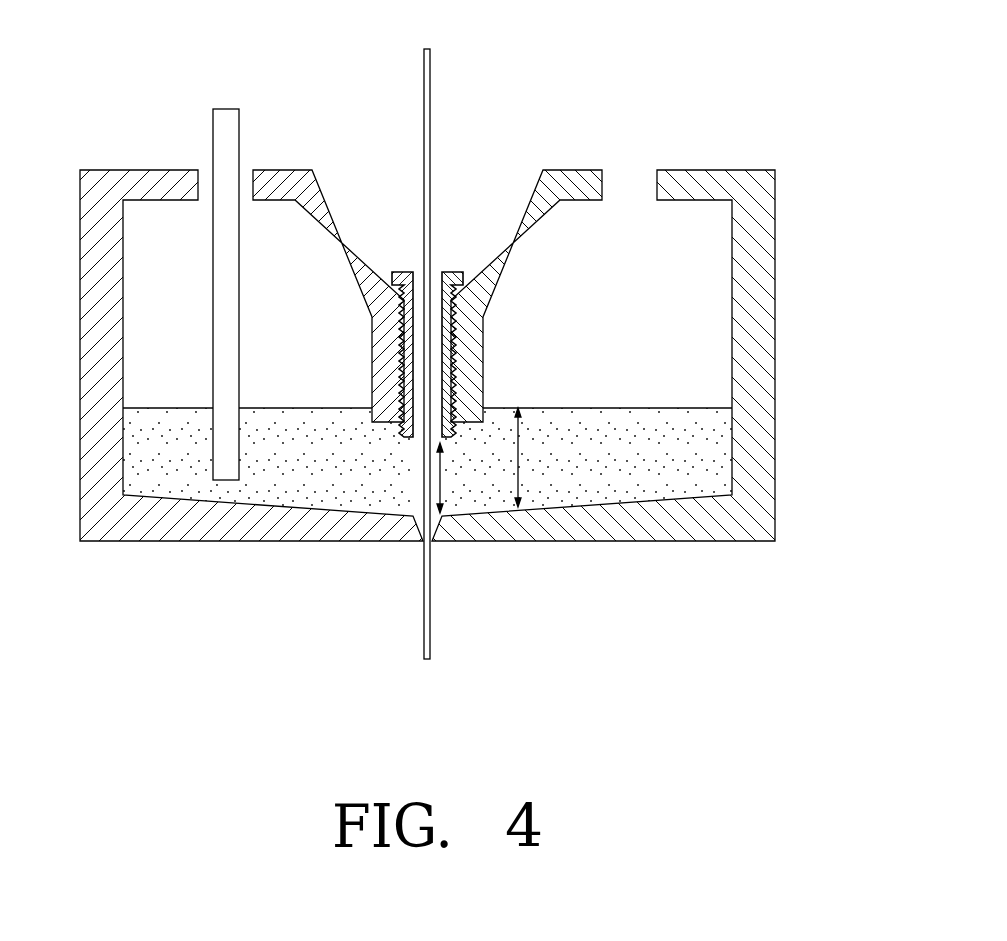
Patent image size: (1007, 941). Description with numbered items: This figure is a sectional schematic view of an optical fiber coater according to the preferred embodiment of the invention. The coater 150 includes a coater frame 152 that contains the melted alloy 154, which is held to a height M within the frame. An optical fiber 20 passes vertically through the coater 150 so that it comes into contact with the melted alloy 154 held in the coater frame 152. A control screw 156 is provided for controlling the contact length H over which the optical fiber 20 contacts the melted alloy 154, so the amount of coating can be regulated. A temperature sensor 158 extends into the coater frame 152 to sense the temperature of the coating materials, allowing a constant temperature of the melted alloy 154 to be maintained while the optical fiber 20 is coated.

The optical fiber 20 is at (429, 92).
The coater 150 is at (484, 343).
The coater frame 152 is at (710, 532).
The melted alloy 154 is at (700, 450).
The control screw 156 is at (450, 268).
The temperature sensor 158 is at (221, 138).